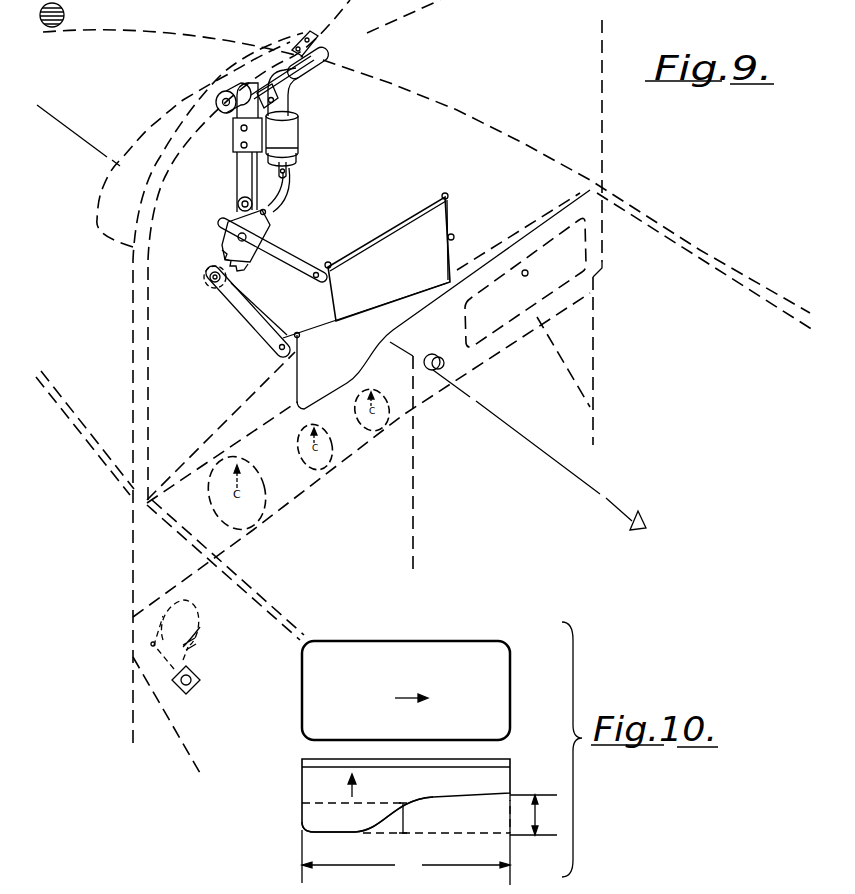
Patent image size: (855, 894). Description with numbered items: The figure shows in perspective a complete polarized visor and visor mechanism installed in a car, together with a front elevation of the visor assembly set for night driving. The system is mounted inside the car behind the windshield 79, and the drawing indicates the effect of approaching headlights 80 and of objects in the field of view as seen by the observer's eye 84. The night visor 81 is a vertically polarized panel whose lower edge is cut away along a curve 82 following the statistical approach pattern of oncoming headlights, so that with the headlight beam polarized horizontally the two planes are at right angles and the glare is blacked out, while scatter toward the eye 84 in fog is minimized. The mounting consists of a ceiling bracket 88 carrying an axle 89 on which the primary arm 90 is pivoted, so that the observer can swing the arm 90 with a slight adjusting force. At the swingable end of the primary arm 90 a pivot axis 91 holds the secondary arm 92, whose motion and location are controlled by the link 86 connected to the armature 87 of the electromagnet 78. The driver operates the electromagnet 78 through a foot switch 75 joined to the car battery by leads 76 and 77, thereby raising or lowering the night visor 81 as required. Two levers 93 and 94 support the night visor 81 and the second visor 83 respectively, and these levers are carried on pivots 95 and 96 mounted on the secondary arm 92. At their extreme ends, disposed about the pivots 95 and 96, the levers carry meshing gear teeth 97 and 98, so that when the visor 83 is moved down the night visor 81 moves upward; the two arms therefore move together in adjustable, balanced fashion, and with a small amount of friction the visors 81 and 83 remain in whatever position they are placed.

In FIG. 9, the foot switch 75 is at (198, 668).
In FIG. 9, the lead 76 is at (188, 632).
In FIG. 9, the lead 77 is at (283, 98).
In FIG. 9, the electromagnet 78 is at (300, 118).
In FIG. 9, the windshield 79 is at (127, 190).
In FIG. 9, the approaching headlights 80 is at (62, 24).
In FIG. 10, the approaching headlights 80 is at (508, 778).
In FIG. 9, the night visor 81 is at (453, 252).
In FIG. 10, the night visor 81 is at (300, 787).
In FIG. 10, the curve of the cut-away lower edge 82 is at (434, 798).
In FIG. 9, the visor 83 is at (457, 200).
In FIG. 10, the visor 83 is at (510, 678).
In FIG. 9, the observer's eye 84 is at (648, 520).
In FIG. 9, the link 86 is at (288, 187).
In FIG. 9, the armature 87 is at (289, 165).
In FIG. 9, the ceiling bracket 88 is at (317, 40).
In FIG. 9, the axle 89 is at (262, 82).
In FIG. 9, the primary arm 90 is at (241, 162).
In FIG. 9, the pivot axis 91 is at (240, 201).
In FIG. 9, the secondary arm 92 is at (264, 226).
In FIG. 9, the lever 93 is at (242, 304).
In FIG. 9, the lever 94 is at (337, 254).
In FIG. 9, the pivot 95 is at (208, 277).
In FIG. 9, the pivot 96 is at (238, 235).
In FIG. 9, the gear teeth 97 is at (232, 256).
In FIG. 9, the gear teeth 98 is at (283, 250).